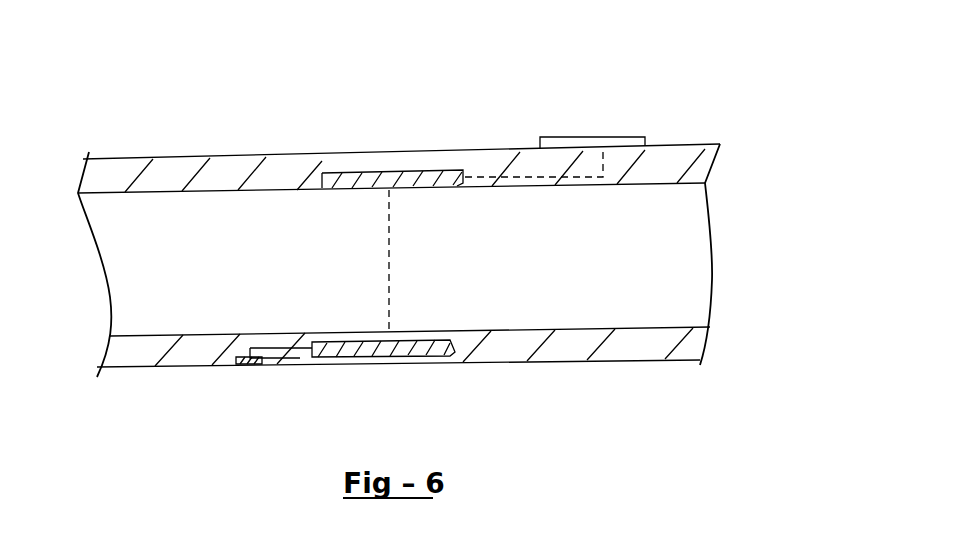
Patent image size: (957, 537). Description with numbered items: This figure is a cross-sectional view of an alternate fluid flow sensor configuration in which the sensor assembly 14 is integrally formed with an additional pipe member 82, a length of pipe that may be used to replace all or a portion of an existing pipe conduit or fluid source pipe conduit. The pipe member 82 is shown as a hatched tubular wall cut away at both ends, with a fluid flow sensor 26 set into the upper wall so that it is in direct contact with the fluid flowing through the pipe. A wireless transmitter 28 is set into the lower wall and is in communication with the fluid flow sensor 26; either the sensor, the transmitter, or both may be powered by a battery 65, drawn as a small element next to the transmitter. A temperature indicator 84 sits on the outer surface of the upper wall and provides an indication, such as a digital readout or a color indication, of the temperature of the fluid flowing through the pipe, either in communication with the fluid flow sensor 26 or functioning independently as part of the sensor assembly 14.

The sensor assembly 14 is at (586, 104).
The fluid flow sensor 26 is at (400, 171).
The wireless transmitter 28 is at (397, 358).
The battery 65 is at (250, 367).
The additional pipe member 82 is at (628, 345).
The temperature indicator 84 is at (635, 137).